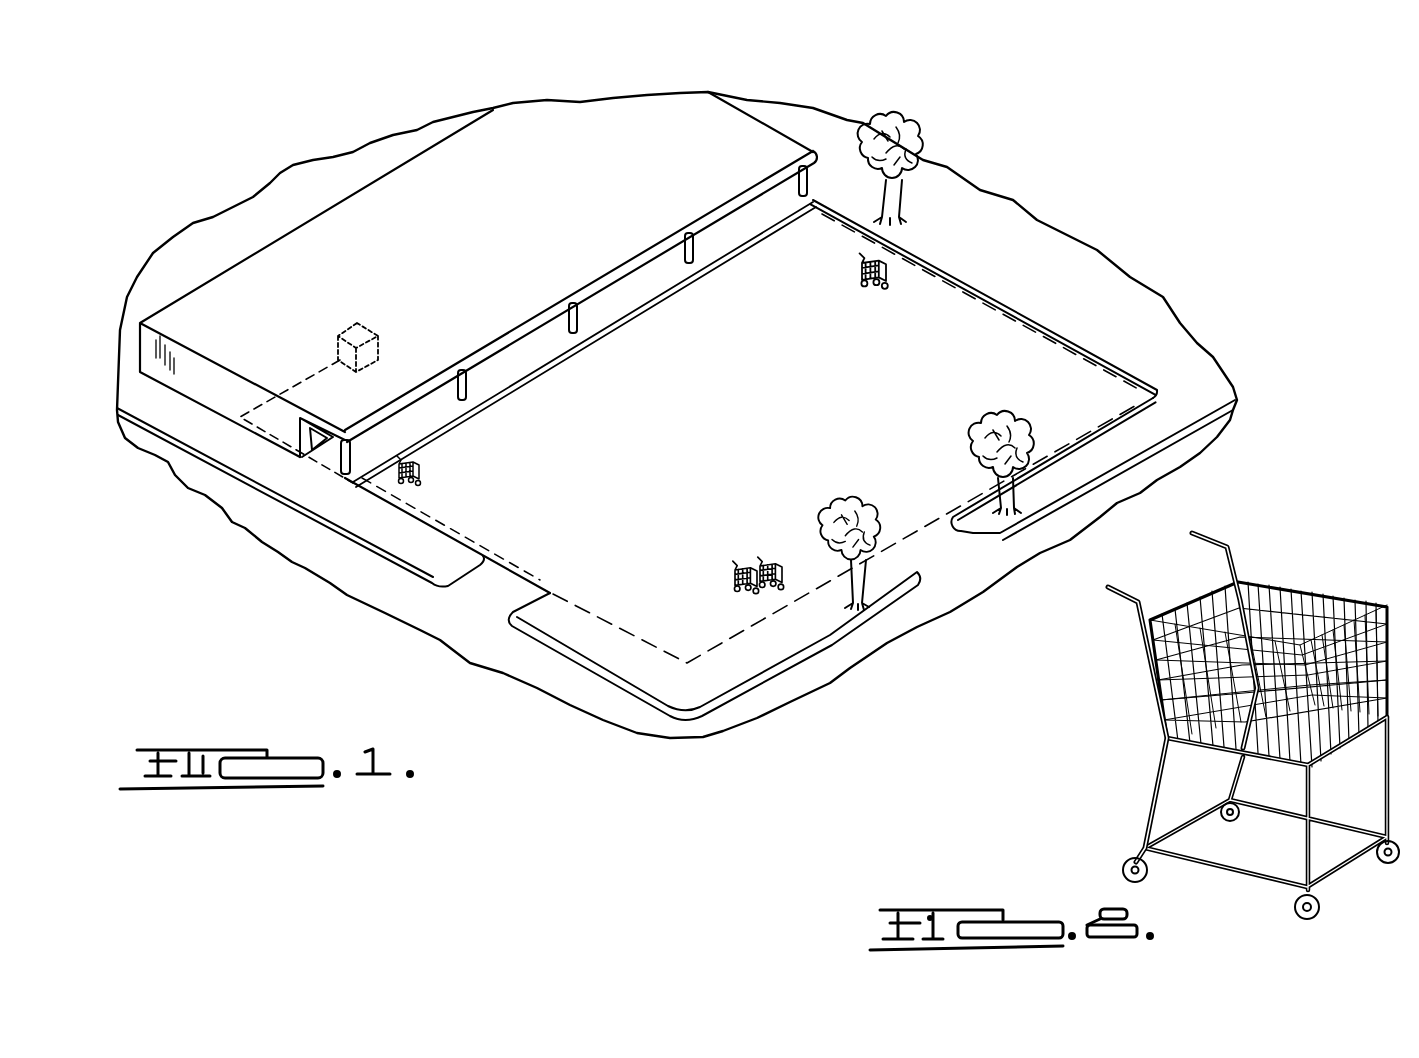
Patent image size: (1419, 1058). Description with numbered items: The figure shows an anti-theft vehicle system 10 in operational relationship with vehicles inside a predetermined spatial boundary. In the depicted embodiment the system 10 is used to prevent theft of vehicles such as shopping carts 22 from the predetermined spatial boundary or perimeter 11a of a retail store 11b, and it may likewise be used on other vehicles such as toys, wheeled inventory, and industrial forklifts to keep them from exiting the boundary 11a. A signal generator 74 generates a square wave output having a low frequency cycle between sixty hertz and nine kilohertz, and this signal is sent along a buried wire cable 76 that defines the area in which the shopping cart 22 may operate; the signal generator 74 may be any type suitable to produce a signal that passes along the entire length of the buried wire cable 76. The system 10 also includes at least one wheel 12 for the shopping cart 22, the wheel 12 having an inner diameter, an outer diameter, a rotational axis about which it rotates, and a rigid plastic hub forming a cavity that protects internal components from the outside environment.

In FIG. 1, the anti-theft vehicle system 10 is at (958, 256).
In FIG. 2, the anti-theft vehicle system 10 is at (1112, 857).
In FIG. 1, the predetermined spatial boundary 11a is at (743, 404).
In FIG. 1, the retail store 11b is at (287, 268).
In FIG. 2, the wheel 12 is at (1122, 878).
In FIG. 1, the shopping cart 22 is at (874, 288).
In FIG. 2, the shopping cart 22 is at (1160, 735).
In FIG. 1, the signal generator 74 is at (368, 326).
In FIG. 1, the buried wire cable 76 is at (505, 561).